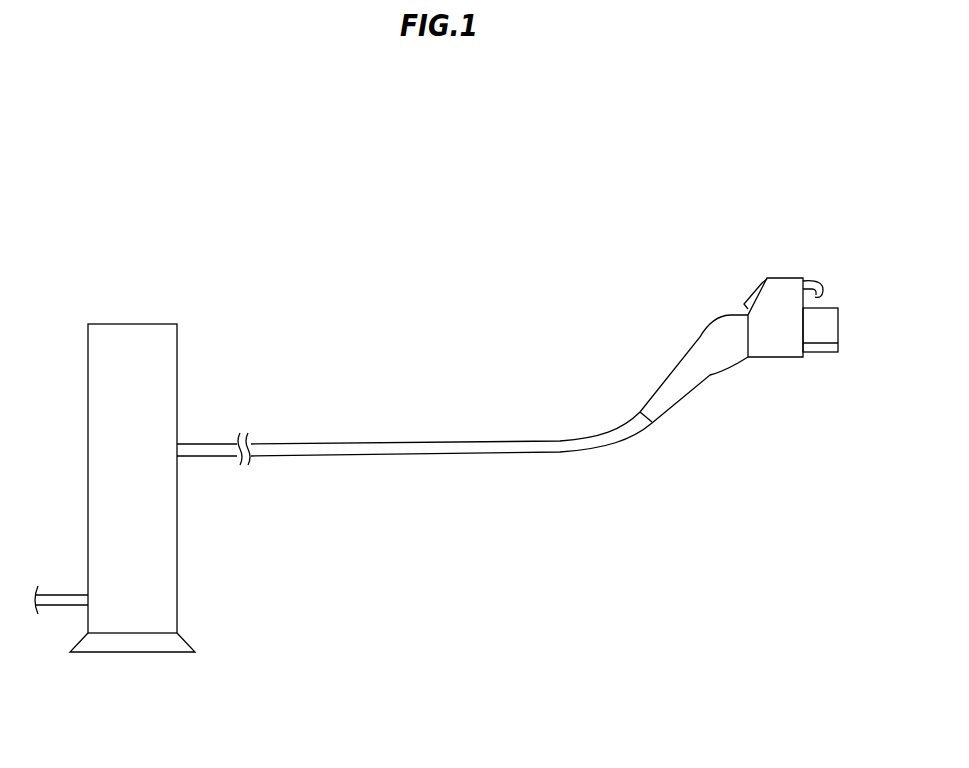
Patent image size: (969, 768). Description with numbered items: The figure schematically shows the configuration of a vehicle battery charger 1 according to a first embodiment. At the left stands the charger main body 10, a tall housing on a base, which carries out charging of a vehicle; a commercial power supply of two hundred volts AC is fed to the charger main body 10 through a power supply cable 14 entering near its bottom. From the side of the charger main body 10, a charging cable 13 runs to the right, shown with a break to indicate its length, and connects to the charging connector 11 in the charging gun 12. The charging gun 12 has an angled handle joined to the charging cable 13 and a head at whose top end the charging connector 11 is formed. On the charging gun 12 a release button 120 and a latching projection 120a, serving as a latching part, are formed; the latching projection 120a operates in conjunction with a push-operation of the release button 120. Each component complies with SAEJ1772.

The vehicle battery charger 1 is at (280, 236).
The charger main body 10 is at (132, 323).
The charging connector 11 is at (833, 351).
The charging gun 12 is at (703, 340).
The charging cable 13 is at (435, 442).
The power supply cable 14 is at (68, 593).
The release button 120 is at (753, 288).
The latching projection 120a is at (822, 283).